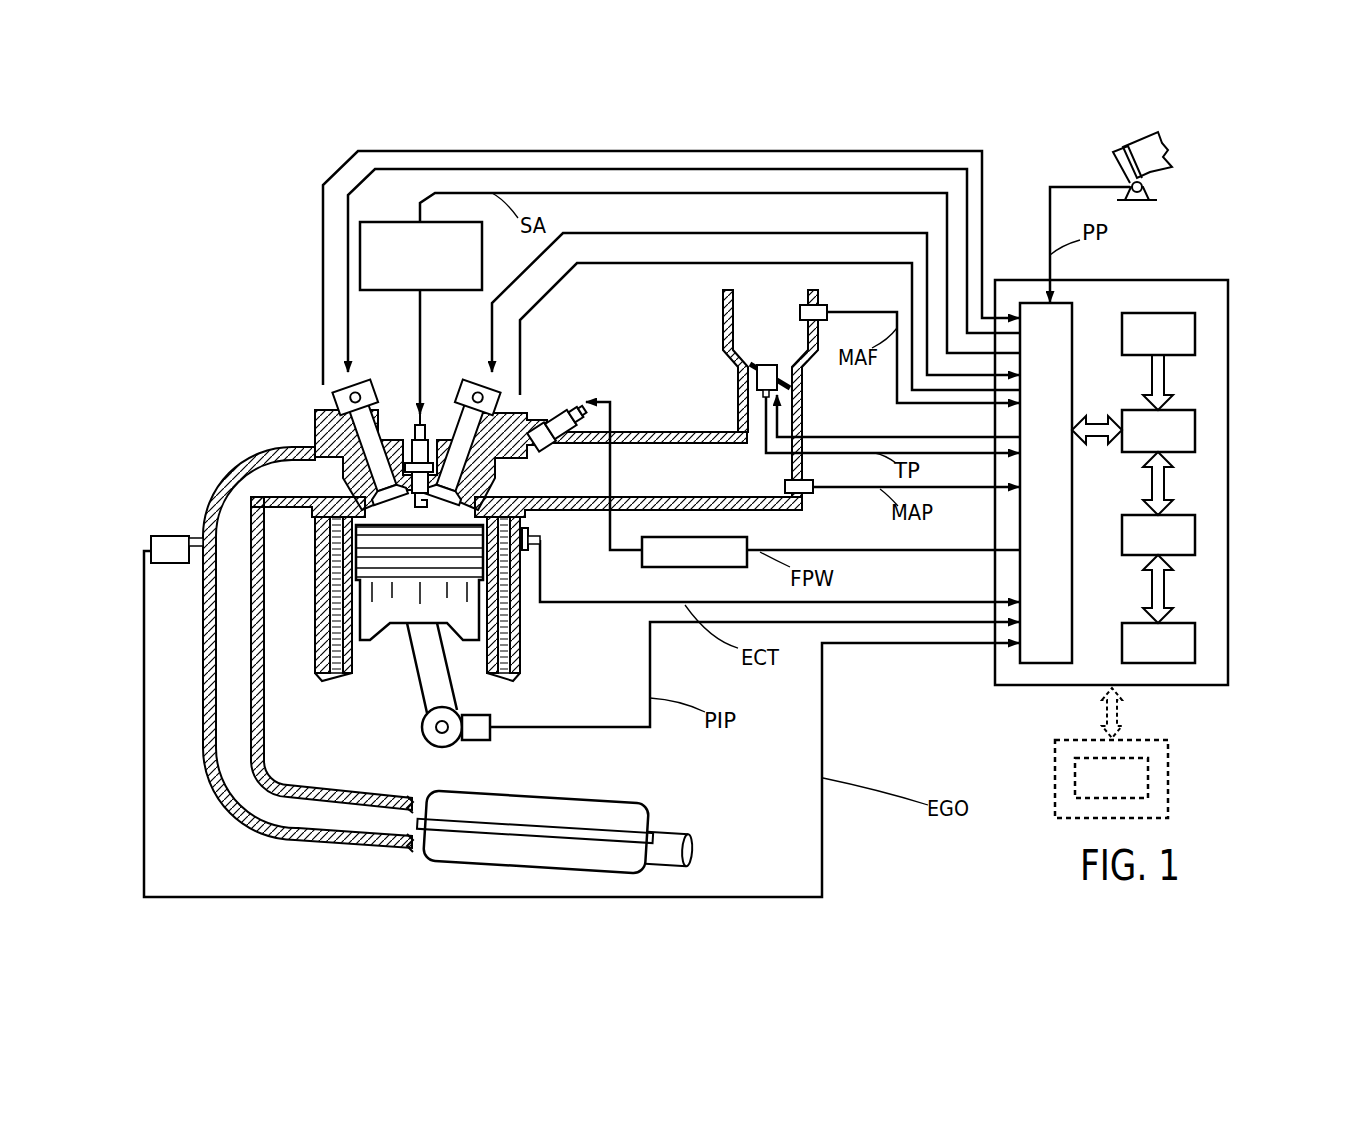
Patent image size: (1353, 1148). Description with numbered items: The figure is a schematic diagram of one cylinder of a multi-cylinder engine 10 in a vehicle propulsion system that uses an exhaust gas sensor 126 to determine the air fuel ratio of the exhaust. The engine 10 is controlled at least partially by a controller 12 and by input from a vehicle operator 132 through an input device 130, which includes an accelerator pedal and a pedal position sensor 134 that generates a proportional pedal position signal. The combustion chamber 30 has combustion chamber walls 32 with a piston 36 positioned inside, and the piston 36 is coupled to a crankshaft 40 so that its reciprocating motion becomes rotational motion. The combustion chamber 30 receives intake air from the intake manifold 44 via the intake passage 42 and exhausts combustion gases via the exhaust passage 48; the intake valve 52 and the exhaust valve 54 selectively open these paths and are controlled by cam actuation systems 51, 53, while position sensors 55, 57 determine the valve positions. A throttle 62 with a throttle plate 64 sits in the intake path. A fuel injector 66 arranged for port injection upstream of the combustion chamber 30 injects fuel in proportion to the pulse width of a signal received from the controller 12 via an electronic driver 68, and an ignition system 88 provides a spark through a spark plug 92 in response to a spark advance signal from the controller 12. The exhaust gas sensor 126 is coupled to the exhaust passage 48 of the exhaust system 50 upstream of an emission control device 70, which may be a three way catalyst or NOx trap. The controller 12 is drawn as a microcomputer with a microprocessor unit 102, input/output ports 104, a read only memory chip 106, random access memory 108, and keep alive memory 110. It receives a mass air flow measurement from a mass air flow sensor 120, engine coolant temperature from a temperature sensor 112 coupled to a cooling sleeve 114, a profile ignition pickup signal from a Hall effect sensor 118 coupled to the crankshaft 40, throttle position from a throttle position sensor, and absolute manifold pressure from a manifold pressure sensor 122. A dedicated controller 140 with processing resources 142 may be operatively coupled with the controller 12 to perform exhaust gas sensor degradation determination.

The engine 10 is at (250, 362).
The controller 12 is at (1225, 282).
The combustion chamber 30 is at (418, 517).
The combustion chamber walls 32 is at (358, 665).
The piston 36 is at (424, 615).
The crankshaft 40 is at (432, 748).
The intake passage 42 is at (756, 339).
The intake manifold 44 is at (686, 483).
The exhaust passage 48 is at (267, 489).
The exhaust system 50 is at (187, 470).
The cam actuation system 51 is at (461, 415).
The intake valve 52 is at (444, 493).
The cam actuation system 53 is at (370, 415).
The exhaust valve 54 is at (389, 493).
The position sensor 55 is at (467, 372).
The position sensor 57 is at (372, 370).
The throttle 62 is at (788, 375).
The throttle plate 64 is at (748, 372).
The fuel injector 66 is at (566, 408).
The electronic driver 68 is at (642, 565).
The emission control device 70 is at (605, 800).
The ignition system 88 is at (372, 222).
The spark plug 92 is at (424, 428).
The microprocessor unit 102 is at (1195, 425).
The input/output ports 104 is at (1075, 306).
The read only memory chip 106 is at (1195, 325).
The random access memory 108 is at (1195, 533).
The keep alive memory 110 is at (1195, 640).
The temperature sensor 112 is at (536, 540).
The cooling sleeve 114 is at (522, 632).
The Hall effect sensor 118 is at (480, 743).
The mass air flow sensor 120 is at (830, 305).
The manifold pressure sensor 122 is at (808, 495).
The exhaust gas sensor 126 is at (150, 543).
The input device 130 is at (1120, 160).
The vehicle operator 132 is at (1165, 153).
The pedal position sensor 134 is at (1150, 188).
The dedicated controller 140 is at (1170, 755).
The processing resources 142 is at (1148, 785).